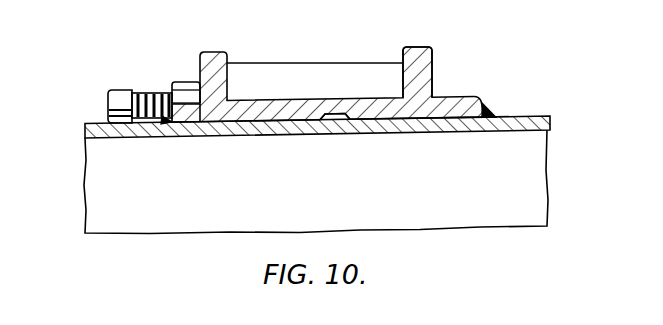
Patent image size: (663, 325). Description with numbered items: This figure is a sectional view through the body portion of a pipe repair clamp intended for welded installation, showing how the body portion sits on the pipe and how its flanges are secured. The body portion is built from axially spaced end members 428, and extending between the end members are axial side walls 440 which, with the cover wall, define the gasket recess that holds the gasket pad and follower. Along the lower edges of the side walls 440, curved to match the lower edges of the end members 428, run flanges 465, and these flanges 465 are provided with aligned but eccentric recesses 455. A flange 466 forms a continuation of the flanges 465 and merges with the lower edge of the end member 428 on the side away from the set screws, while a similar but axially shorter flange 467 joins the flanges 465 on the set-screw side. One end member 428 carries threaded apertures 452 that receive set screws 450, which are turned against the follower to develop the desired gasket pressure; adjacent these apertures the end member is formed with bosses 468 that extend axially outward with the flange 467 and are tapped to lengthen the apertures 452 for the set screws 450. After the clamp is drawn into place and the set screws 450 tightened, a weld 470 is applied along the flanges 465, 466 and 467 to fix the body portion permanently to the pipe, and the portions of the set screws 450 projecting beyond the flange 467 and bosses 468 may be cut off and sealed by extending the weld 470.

The end member 428 is at (430, 53).
The side wall 440 is at (355, 80).
The set screw 450 is at (118, 99).
The threaded aperture 452 is at (165, 98).
The recess 455 is at (335, 117).
The flange 465 is at (255, 108).
The flange 466 is at (460, 100).
The flange 467 is at (182, 115).
The boss 468 is at (183, 85).
The weld 470 is at (489, 109).